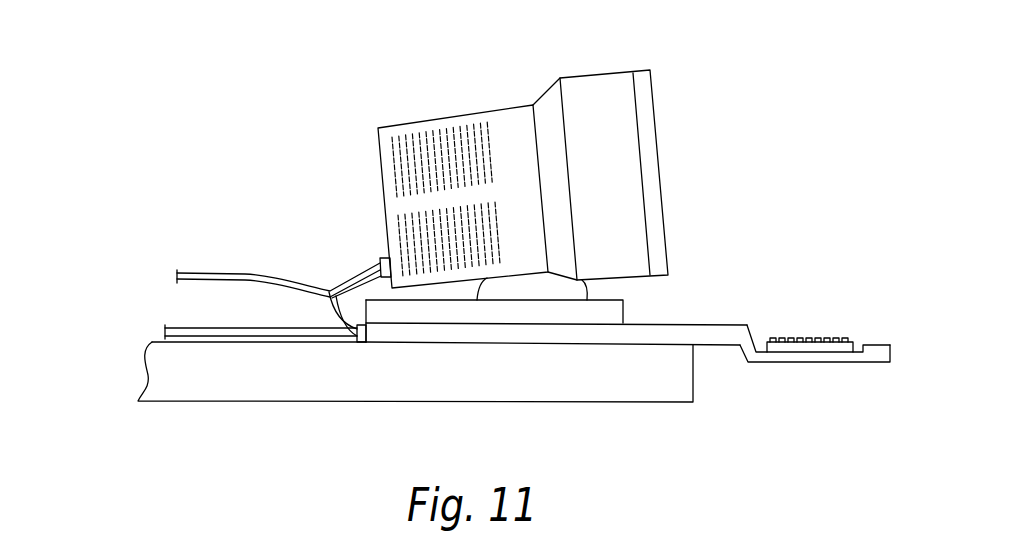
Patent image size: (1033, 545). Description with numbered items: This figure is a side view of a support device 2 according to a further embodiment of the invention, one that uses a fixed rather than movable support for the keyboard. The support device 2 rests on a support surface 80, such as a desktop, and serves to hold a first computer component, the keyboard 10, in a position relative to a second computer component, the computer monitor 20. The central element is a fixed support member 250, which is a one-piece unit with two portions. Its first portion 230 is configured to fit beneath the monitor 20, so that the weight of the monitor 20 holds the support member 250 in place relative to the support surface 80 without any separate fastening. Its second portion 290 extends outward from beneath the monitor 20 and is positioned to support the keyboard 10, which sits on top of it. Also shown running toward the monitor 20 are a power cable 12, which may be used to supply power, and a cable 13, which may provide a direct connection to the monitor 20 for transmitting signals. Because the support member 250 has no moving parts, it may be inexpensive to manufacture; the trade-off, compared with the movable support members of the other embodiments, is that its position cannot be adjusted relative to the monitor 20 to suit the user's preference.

The support device 2 is at (325, 240).
The keyboard 10 is at (848, 338).
The power cable 12 is at (185, 326).
The cable 13 is at (241, 271).
The computer monitor 20 is at (517, 107).
The support surface 80 is at (152, 341).
The first portion 230 is at (508, 337).
The fixed support member 250 is at (735, 308).
The second portion 290 is at (802, 364).